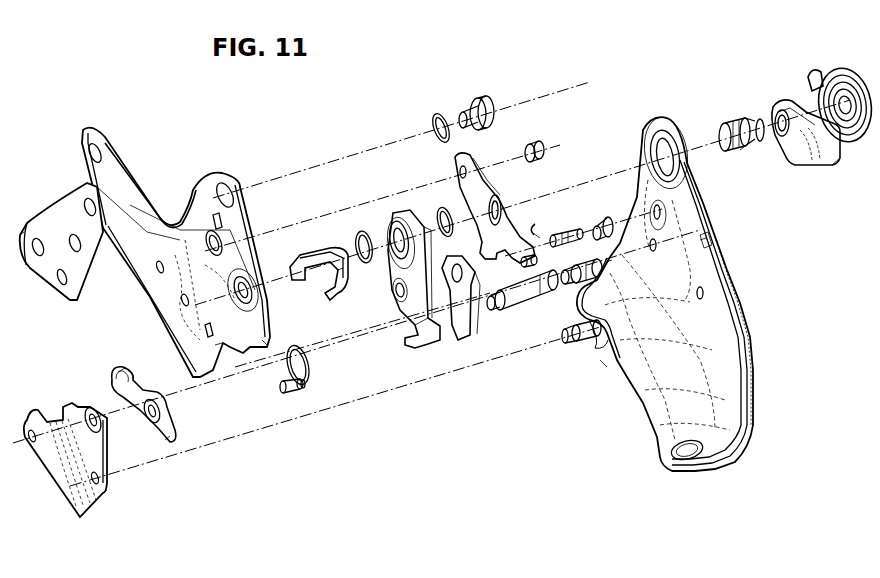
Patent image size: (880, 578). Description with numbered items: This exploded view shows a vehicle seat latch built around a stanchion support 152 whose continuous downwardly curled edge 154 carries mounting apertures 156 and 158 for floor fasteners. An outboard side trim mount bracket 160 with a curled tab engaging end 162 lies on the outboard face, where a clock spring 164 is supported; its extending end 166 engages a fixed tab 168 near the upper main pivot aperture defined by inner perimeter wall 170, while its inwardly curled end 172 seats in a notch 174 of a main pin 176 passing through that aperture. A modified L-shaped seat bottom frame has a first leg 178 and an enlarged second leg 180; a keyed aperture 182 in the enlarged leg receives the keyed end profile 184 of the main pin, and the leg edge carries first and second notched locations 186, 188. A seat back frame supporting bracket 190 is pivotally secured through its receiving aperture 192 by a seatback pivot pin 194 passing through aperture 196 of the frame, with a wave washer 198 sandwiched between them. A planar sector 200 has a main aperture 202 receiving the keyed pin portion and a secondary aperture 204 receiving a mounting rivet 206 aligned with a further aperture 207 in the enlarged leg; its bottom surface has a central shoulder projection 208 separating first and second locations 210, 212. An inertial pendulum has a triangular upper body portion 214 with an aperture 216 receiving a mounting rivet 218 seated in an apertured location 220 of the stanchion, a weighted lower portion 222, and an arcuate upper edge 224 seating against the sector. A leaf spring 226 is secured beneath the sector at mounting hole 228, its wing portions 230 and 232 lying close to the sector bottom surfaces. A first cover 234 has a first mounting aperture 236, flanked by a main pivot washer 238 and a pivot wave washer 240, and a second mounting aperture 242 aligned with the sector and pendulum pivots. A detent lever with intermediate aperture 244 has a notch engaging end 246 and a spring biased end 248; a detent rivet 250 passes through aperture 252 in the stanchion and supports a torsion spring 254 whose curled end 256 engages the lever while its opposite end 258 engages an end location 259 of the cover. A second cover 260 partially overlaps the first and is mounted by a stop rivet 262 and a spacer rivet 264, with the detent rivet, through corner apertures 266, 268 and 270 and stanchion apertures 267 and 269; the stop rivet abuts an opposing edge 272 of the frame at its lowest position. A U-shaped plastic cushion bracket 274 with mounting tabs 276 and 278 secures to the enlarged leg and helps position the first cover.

The stanchion support 152 is at (732, 298).
The downwardly curled edge 154 is at (583, 352).
The mounting aperture 156 is at (606, 362).
The mounting aperture 158 is at (675, 455).
The outboard side trim mount bracket 160 is at (797, 155).
The tab engaging end 162 is at (833, 162).
The clock spring 164 is at (846, 68).
The extending end 166 is at (812, 72).
The fixed tab 168 is at (641, 132).
The inner perimeter wall 170 is at (660, 145).
The inwardly curled end 172 is at (838, 112).
The notch 174 is at (758, 119).
The main pin 176 is at (743, 150).
The first leg 178 is at (135, 255).
The second enlarged dimension leg 180 is at (205, 278).
The keyed aperture 182 is at (247, 285).
The keyed end profile 184 is at (724, 124).
The first notched location 186 is at (222, 346).
The second notched location 188 is at (272, 331).
The seat back frame supporting bracket 190 is at (55, 280).
The receiving aperture 192 is at (30, 240).
The seatback pivot pin 194 is at (473, 99).
The aperture 196 is at (220, 186).
The wave washer 198 is at (437, 115).
The sector 200 is at (488, 190).
The first aperture 202 is at (502, 200).
The secondary aperture 204 is at (470, 160).
The secondary mounting rivet 206 is at (546, 148).
The further aperture 207 is at (220, 240).
The shoulder projection 208 is at (472, 268).
The first subset location 210 is at (482, 250).
The second subset location 212 is at (538, 262).
The upper body portion 214 is at (450, 280).
The aperture 216 is at (500, 300).
The mounting rivet 218 is at (604, 220).
The apertured location 220 is at (662, 208).
The weighted lower portion 222 is at (467, 340).
The arcuate edge configuration 224 is at (455, 257).
The leaf spring 226 is at (560, 234).
The mounting hole 228 is at (508, 250).
The first wing portion 230 is at (537, 227).
The second wing portion 232 is at (614, 242).
The cover 234 is at (390, 268).
The first mounting aperture 236 is at (395, 232).
The main pivot washer 238 is at (358, 240).
The pivot wave washer 240 is at (447, 208).
The second mounting aperture 242 is at (397, 300).
The aperture location 244 is at (150, 417).
The notch engaging end 246 is at (115, 372).
The spring biased end 248 is at (170, 444).
The detent rivet 250 is at (576, 285).
The aperture location 252 is at (705, 243).
The secondary torsion spring 254 is at (310, 372).
The curled end 256 is at (302, 390).
The opposite extending end 258 is at (280, 387).
The end location 259 is at (410, 350).
The second cover 260 is at (77, 457).
The stop rivet 262 is at (520, 297).
The spacer rivet 264 is at (563, 343).
The aperture 266 is at (31, 430).
The aperture 267 is at (657, 243).
The aperture 268 is at (104, 496).
The aperture 269 is at (701, 298).
The aperture 270 is at (88, 410).
The opposing edge 272 is at (210, 384).
The U shaped attachment/cushion bracket 274 is at (338, 270).
The mounting tab 276 is at (293, 282).
The mounting tab 278 is at (331, 305).